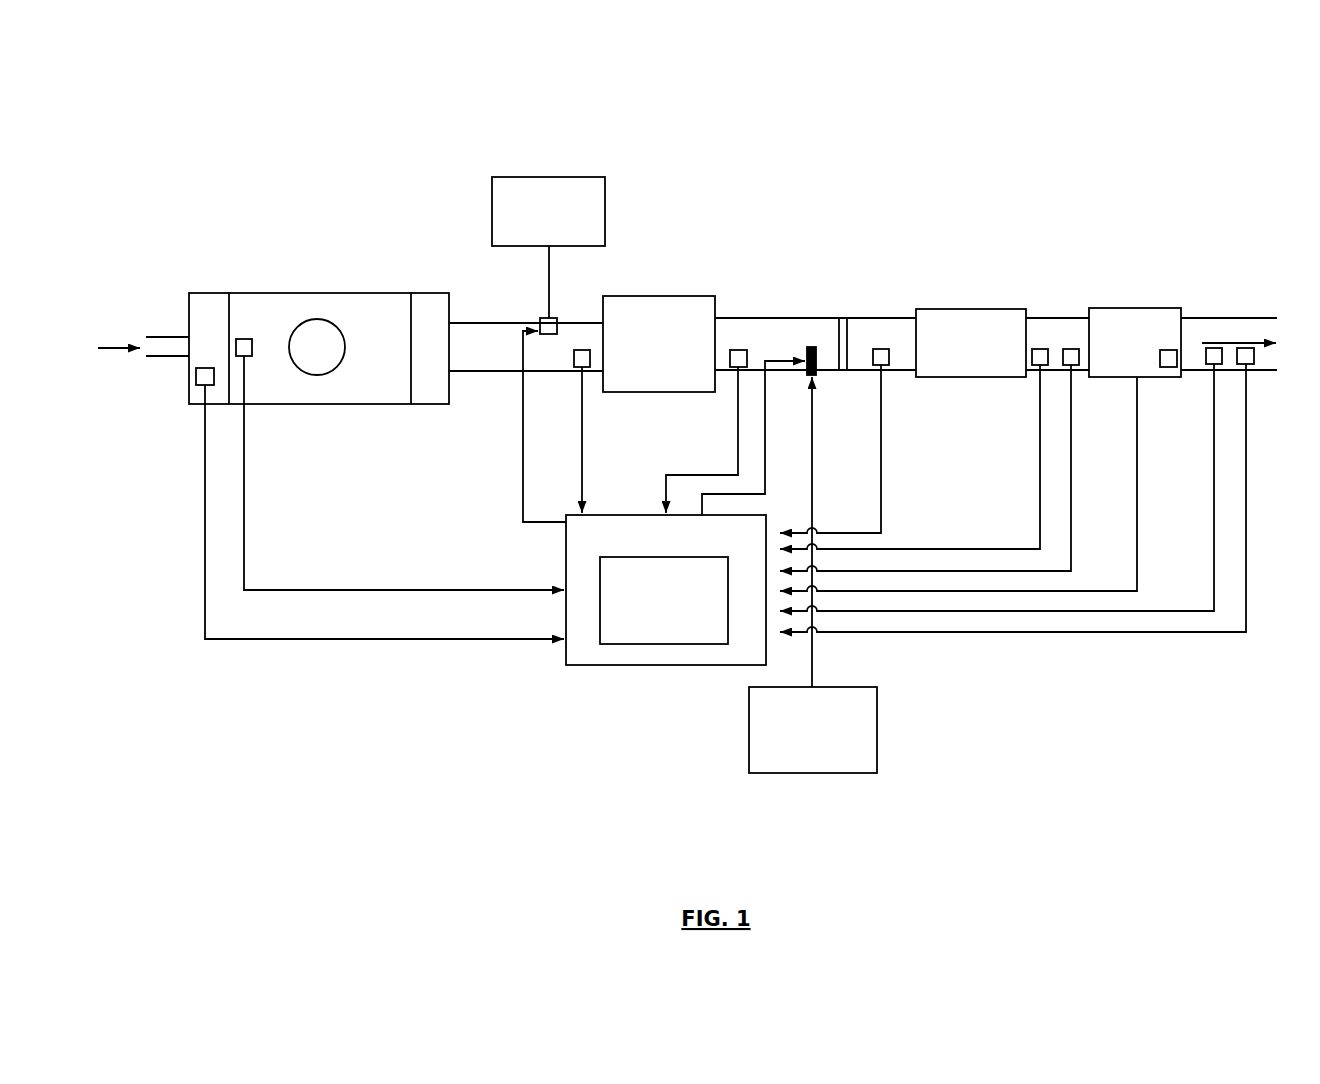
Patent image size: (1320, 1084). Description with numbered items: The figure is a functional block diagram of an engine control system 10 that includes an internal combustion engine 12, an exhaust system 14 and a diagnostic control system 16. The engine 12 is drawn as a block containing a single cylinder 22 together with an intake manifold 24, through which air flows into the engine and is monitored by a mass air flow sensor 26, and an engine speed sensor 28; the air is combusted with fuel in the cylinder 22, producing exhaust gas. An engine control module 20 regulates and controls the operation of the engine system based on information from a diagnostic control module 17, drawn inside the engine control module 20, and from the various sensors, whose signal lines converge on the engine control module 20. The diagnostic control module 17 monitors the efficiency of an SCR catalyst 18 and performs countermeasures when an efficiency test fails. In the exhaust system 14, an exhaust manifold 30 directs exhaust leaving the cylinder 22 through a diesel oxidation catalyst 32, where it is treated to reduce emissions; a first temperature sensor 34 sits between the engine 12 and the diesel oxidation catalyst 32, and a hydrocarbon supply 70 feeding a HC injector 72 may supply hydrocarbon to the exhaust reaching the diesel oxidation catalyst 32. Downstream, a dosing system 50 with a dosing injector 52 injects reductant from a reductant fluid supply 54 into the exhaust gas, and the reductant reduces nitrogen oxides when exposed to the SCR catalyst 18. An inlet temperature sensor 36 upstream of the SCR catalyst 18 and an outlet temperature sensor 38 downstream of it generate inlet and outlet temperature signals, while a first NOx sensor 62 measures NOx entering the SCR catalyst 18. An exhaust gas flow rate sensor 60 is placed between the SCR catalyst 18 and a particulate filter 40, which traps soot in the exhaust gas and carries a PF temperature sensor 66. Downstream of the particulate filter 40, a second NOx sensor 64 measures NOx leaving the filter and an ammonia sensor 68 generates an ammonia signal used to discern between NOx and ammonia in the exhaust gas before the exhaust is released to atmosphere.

The engine control system 10 is at (313, 153).
The internal combustion engine 12 is at (270, 292).
The exhaust system 14 is at (1022, 188).
The diagnostic control system 16 is at (989, 665).
The diagnostic control module 17 is at (663, 645).
The SCR catalyst 18 is at (962, 309).
The engine control module 20 is at (566, 565).
The cylinder 22 is at (320, 320).
The intake manifold 24 is at (189, 292).
The mass air flow sensor 26 is at (196, 376).
The engine speed sensor 28 is at (244, 338).
The exhaust manifold 30 is at (430, 292).
The diesel oxidation catalyst 32 is at (653, 296).
The first temperature sensor 34 is at (574, 358).
The inlet temperature sensor 36 is at (742, 350).
The outlet temperature sensor 38 is at (1040, 349).
The particulate filter 40 is at (810, 347).
The dosing system 50 is at (744, 800).
The dosing injector 52 is at (843, 318).
The reductant fluid supply 54 is at (857, 687).
The exhaust gas flow rate sensor 60 is at (1066, 349).
The first NOx sensor 62 is at (883, 349).
The second NOx sensor 64 is at (1206, 358).
The PF temperature sensor 66 is at (1169, 350).
The ammonia sensor 68 is at (1257, 356).
The hydrocarbon supply 70 is at (549, 177).
The HC injector 72 is at (557, 318).